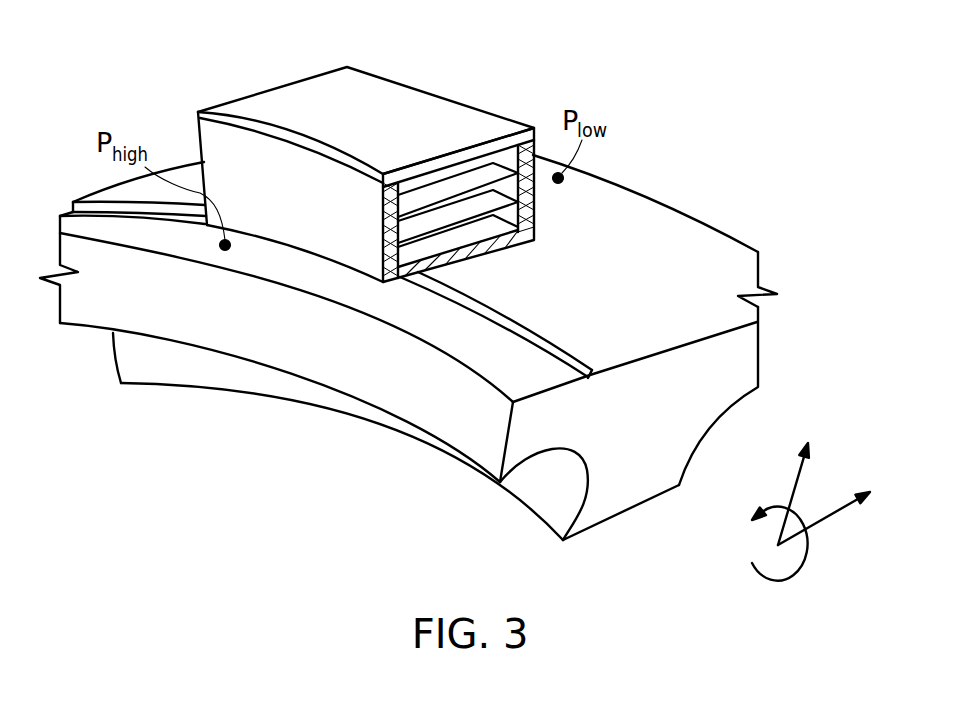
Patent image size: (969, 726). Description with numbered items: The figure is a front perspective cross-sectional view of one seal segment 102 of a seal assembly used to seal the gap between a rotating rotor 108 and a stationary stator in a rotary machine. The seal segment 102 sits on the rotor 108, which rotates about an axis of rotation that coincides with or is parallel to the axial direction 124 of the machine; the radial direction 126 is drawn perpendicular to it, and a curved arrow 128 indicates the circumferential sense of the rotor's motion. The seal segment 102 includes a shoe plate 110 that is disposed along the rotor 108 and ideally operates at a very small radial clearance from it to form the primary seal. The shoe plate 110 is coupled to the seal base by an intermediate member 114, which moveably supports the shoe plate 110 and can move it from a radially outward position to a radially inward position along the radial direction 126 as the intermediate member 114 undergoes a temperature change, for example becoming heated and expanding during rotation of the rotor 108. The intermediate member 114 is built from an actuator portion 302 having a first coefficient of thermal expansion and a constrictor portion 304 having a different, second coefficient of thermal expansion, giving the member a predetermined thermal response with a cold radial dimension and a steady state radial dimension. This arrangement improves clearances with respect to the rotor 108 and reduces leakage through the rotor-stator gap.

The seal segment 102 is at (394, 100).
The rotor 108 is at (763, 352).
The shoe plate 110 is at (533, 230).
The intermediate member 114 is at (383, 190).
The axial direction 124 is at (835, 513).
The radial direction 126 is at (803, 473).
The circumferential direction 128 is at (748, 562).
The actuator portion 302 is at (506, 162).
The constrictor portion 304 is at (534, 198).